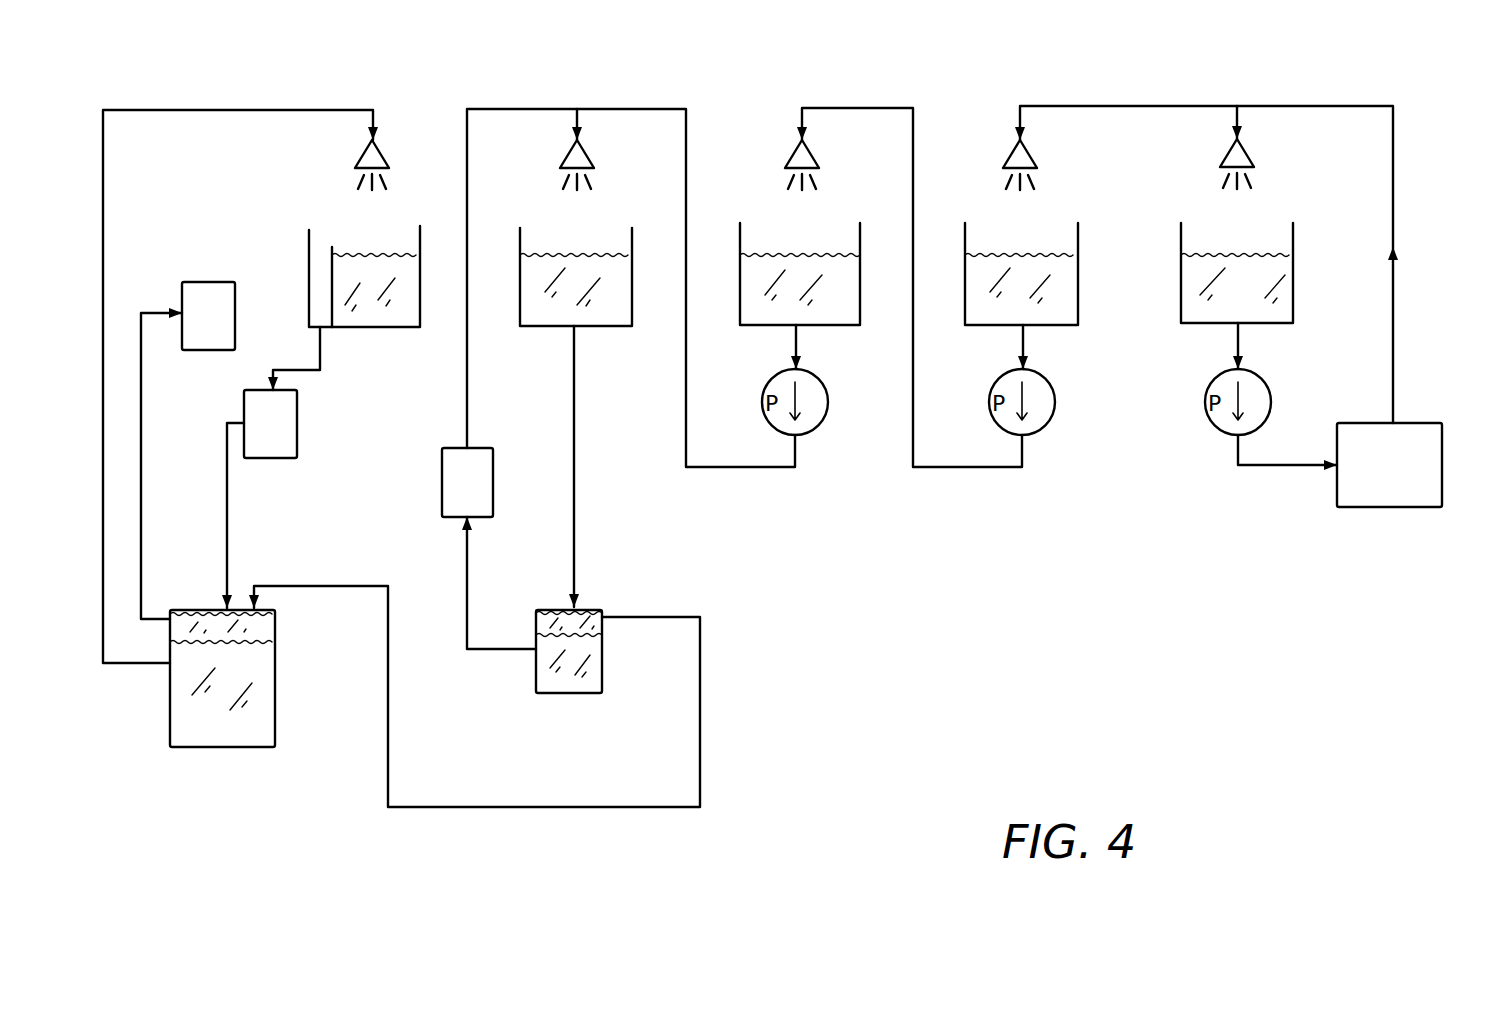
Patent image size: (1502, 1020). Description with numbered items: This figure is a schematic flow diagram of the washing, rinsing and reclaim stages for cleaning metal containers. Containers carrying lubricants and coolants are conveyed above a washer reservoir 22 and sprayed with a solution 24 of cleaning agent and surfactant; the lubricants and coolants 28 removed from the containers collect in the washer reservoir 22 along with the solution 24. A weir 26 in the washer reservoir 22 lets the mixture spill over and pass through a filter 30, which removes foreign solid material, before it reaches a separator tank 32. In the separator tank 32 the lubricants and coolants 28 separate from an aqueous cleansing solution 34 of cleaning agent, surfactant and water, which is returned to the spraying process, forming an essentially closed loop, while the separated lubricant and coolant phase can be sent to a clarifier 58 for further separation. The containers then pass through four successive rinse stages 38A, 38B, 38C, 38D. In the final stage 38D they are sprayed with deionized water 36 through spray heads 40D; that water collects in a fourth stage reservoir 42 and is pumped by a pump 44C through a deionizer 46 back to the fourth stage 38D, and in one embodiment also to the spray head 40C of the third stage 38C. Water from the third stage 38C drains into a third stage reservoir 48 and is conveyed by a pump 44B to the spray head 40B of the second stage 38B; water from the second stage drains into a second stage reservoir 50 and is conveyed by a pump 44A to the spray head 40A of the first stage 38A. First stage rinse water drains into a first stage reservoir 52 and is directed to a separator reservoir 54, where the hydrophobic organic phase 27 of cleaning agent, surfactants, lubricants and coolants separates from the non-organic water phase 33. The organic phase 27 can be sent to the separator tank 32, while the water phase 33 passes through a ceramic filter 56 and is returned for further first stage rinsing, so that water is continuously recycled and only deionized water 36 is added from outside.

The washer reservoir 22 is at (420, 295).
The solution 24 is at (397, 181).
The weir 26 is at (336, 290).
The organic phase 27 is at (597, 622).
The lubricants and coolants 28 is at (268, 630).
The filter 30 is at (297, 428).
The separator tank 32 is at (275, 690).
The non-organic water phase 33 is at (555, 680).
The aqueous cleansing solution 34 is at (256, 730).
The deionized water 36 is at (1360, 493).
The first rinse stage 38A is at (586, 90).
The second rinse stage 38B is at (851, 88).
The third rinse stage 38C is at (1026, 86).
The fourth rinse stage 38D is at (1254, 86).
The spray head 40A is at (590, 152).
The spray head 40B is at (815, 150).
The spray head 40C is at (1033, 148).
The spray head 40D is at (1250, 146).
The fourth stage reservoir 42 is at (1293, 290).
The pump 44A is at (828, 400).
The pump 44B is at (1055, 400).
The pump 44C is at (1271, 400).
The deionizer 46 is at (1442, 478).
The third stage reservoir 48 is at (1078, 290).
The second stage reservoir 50 is at (860, 295).
The first stage reservoir 52 is at (632, 295).
The separator reservoir 54 is at (602, 668).
The filter 56 is at (493, 475).
The clarifier 58 is at (235, 313).